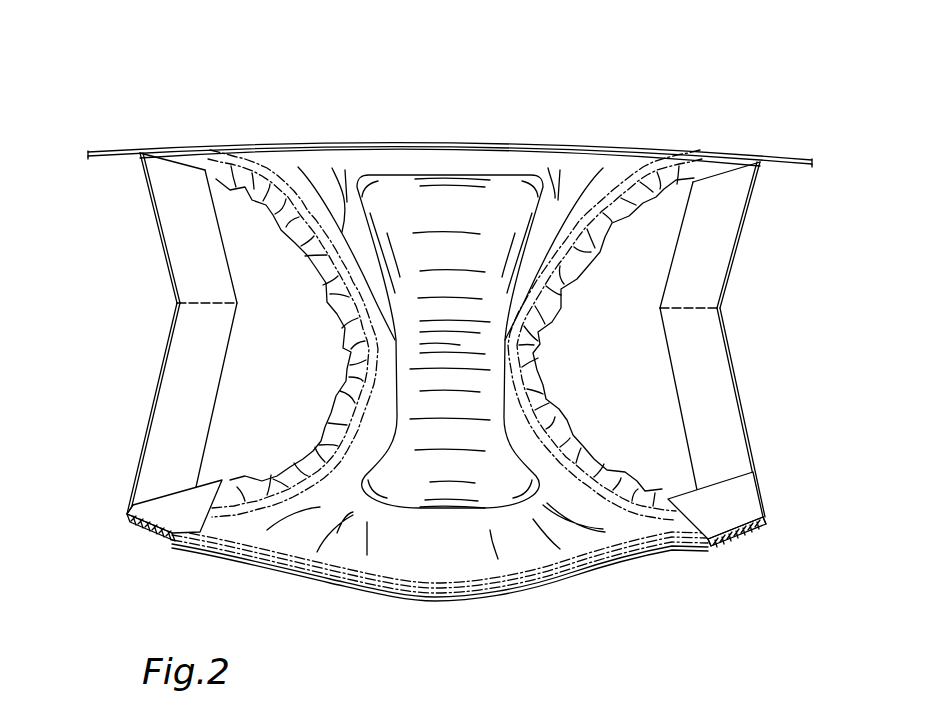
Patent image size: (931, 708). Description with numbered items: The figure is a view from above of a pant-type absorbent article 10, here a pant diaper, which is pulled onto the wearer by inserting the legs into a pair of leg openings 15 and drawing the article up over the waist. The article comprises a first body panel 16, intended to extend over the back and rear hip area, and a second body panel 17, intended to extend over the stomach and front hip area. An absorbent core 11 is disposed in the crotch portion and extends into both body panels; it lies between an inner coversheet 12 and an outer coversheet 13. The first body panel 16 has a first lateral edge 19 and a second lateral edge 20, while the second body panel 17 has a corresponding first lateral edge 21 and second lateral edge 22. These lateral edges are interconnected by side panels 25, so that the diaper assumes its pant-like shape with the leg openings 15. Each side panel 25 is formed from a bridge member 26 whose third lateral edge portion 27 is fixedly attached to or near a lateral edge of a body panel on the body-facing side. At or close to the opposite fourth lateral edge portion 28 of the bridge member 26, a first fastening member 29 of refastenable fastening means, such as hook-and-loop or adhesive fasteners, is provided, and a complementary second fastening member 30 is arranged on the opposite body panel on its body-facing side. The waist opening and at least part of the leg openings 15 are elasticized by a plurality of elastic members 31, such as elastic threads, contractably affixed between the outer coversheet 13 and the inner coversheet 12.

The pant-type absorbent article 10 is at (148, 76).
The absorbent core 11 is at (496, 411).
The inner coversheet 12 is at (455, 559).
The outer coversheet 13 is at (542, 592).
The leg openings 15 is at (271, 366).
The first body panel 16 is at (328, 141).
The second body panel 17 is at (603, 579).
The first lateral edge 19 is at (89, 153).
The second lateral edge 20 is at (812, 162).
The first lateral edge 21 is at (127, 514).
The second lateral edge 22 is at (763, 516).
The side panel 25 is at (177, 389).
The bridge member 26 is at (180, 257).
The third lateral edge portion 27 is at (88, 160).
The fourth lateral edge portion 28 is at (210, 519).
The first fastening member 29 is at (722, 540).
The second fastening member 30 is at (140, 527).
The elastic members 31 is at (588, 268).